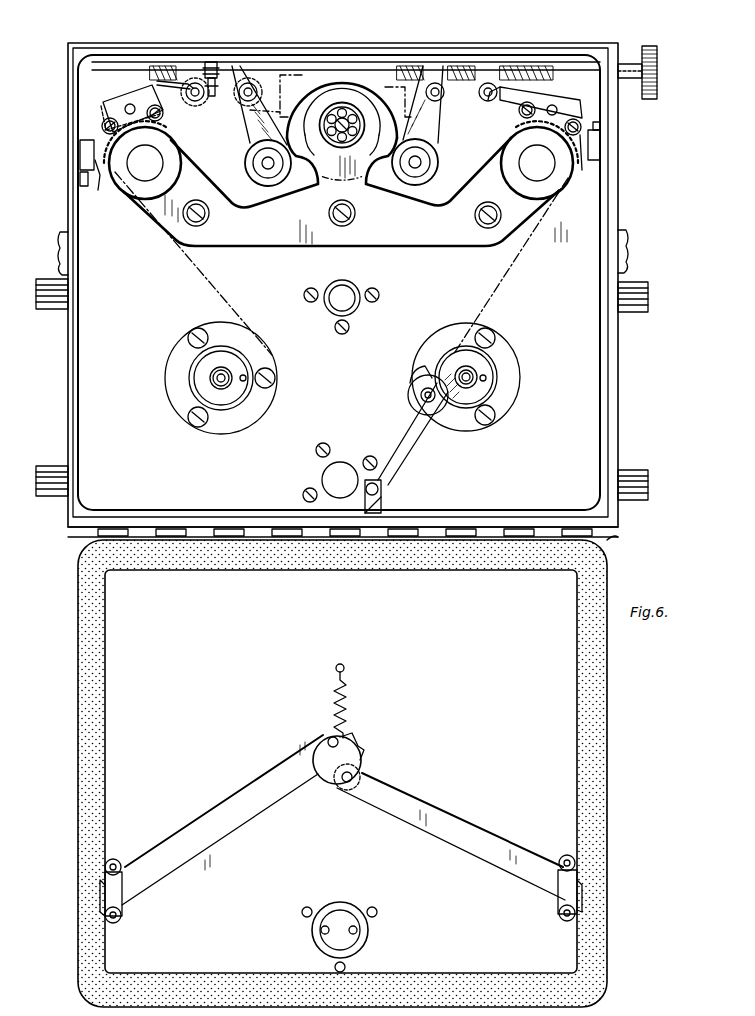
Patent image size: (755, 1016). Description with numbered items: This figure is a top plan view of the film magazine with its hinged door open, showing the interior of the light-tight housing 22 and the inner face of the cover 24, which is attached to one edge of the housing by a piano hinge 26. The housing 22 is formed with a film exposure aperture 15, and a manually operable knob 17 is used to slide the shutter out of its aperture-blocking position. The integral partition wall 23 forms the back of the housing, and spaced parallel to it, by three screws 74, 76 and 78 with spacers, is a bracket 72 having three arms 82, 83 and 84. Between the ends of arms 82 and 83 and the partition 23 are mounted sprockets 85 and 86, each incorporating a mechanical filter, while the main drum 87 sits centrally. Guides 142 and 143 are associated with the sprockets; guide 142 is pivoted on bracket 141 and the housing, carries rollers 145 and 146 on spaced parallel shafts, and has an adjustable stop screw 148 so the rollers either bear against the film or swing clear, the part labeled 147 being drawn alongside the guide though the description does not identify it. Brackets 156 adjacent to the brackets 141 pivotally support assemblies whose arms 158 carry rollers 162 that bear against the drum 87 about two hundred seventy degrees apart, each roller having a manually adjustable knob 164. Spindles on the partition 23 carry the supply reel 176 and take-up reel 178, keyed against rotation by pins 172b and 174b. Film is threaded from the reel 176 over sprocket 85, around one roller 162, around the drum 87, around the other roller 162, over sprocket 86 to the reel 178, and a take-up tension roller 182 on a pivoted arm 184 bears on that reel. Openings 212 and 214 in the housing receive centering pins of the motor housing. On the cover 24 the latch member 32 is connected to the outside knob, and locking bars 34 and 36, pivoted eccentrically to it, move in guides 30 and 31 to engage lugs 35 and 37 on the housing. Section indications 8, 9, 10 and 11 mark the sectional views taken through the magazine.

The section line 8- 8 is at (50, 381).
The section line 9- 9 is at (130, 250).
The section line 10- 10 is at (60, 172).
The section line 11- 11 is at (52, 133).
The film exposure aperture 15 is at (338, 48).
The manually operable knob 17 is at (657, 58).
The light-tight housing 22 is at (64, 530).
The integral partition wall 23 is at (342, 391).
The cover 24 is at (78, 736).
The piano hinge 26 is at (618, 540).
The guide 30 is at (122, 906).
The guide 31 is at (558, 904).
The member 32 is at (334, 784).
The locking bar 34 is at (196, 852).
The lug 35 is at (110, 190).
The locking bar 36 is at (462, 856).
The lug 37 is at (568, 188).
The bracket 72 is at (282, 247).
The screw 74 is at (203, 224).
The screw 76 is at (342, 224).
The screw 78 is at (483, 228).
The arm 82 is at (178, 226).
The arm 83 is at (546, 206).
The arm 84 is at (324, 170).
The sprocket 85 is at (118, 200).
The sprocket 86 is at (520, 132).
The main drum 87 is at (342, 68).
The bracket 141 is at (195, 62).
The guide 142 is at (136, 86).
The guide 143 is at (582, 100).
The roller 145 is at (104, 100).
The roller 146 is at (196, 104).
The link bar 147 is at (176, 83).
The screw 148 is at (210, 89).
The bracket 156 is at (243, 62).
The arm 158 is at (252, 112).
The roller 162 is at (254, 142).
The manually adjustable knob 164 is at (270, 175).
The pin 172b is at (244, 382).
The pin 174b is at (486, 379).
The supply reel 176 is at (276, 352).
The take-up reel 178 is at (518, 356).
The take-up tension roller 182 is at (408, 400).
The pivoted arm 184 is at (418, 440).
The opening 212 is at (358, 309).
The opening 214 is at (330, 462).